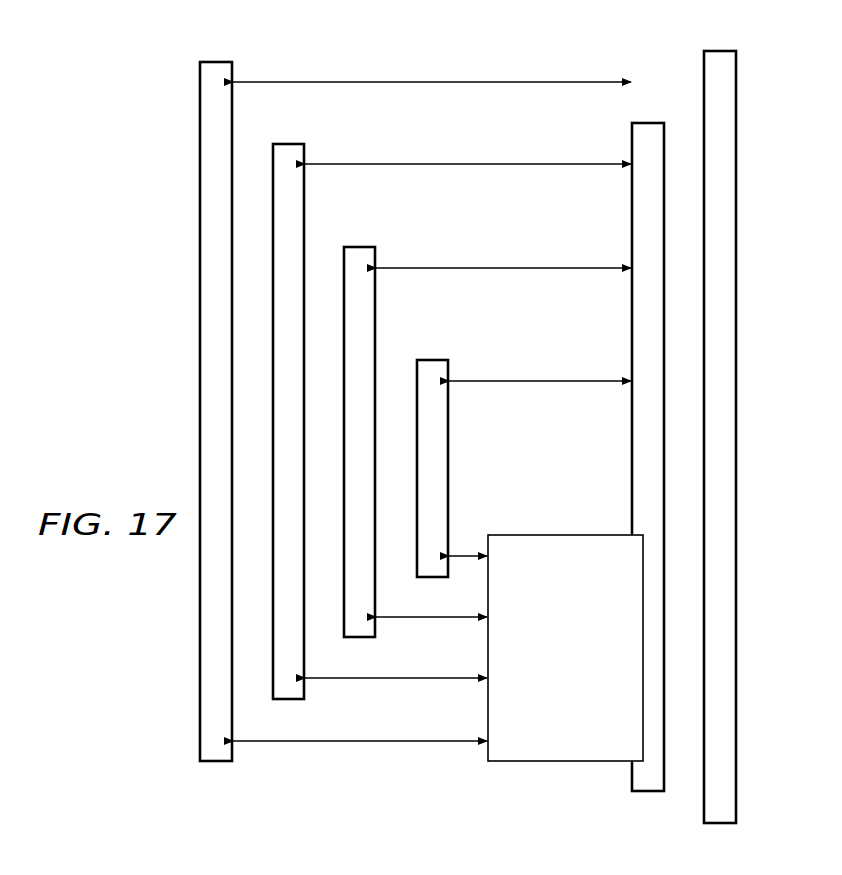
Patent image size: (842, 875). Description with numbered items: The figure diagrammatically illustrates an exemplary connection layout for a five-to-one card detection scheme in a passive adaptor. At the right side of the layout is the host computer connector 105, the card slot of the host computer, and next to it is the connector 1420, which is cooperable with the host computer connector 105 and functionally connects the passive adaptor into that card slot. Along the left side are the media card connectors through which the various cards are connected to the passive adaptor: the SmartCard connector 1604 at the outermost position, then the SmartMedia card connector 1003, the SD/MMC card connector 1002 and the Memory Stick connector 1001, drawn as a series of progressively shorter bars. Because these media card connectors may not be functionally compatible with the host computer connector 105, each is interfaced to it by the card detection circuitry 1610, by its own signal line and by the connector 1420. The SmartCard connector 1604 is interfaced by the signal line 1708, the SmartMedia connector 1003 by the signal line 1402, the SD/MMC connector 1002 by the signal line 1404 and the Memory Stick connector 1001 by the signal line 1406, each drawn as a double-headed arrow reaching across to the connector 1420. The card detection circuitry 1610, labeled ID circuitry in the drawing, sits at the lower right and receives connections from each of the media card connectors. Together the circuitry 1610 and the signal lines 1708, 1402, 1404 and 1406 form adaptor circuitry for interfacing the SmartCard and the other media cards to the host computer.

The host computer connector 105 is at (736, 437).
The media card connector 1604 is at (200, 412).
The media card connector 1003 is at (330, 222).
The media card connector 1002 is at (375, 337).
The media card connector 1001 is at (448, 473).
The connector 1420 is at (632, 464).
The card detection circuitry 1610 is at (591, 689).
The signal line 1708 is at (458, 83).
The signal line 1402 is at (463, 166).
The signal line 1404 is at (559, 267).
The signal line 1406 is at (537, 380).